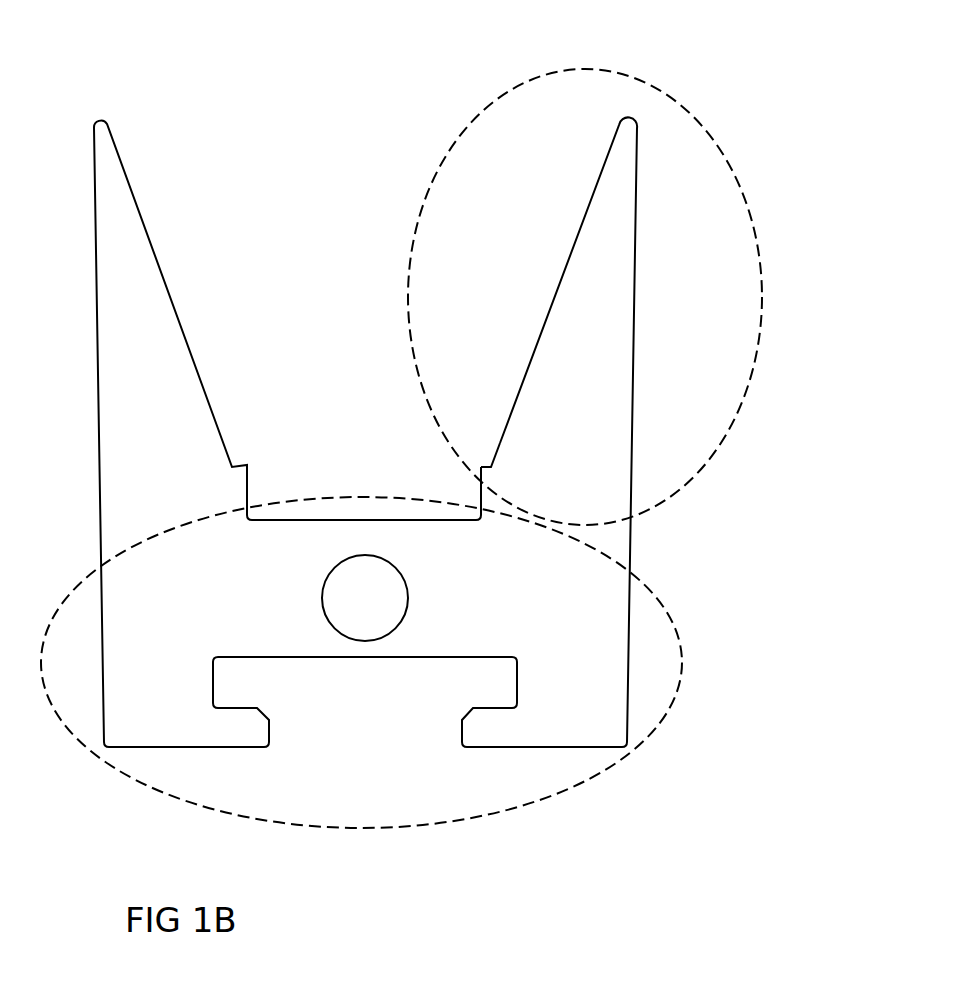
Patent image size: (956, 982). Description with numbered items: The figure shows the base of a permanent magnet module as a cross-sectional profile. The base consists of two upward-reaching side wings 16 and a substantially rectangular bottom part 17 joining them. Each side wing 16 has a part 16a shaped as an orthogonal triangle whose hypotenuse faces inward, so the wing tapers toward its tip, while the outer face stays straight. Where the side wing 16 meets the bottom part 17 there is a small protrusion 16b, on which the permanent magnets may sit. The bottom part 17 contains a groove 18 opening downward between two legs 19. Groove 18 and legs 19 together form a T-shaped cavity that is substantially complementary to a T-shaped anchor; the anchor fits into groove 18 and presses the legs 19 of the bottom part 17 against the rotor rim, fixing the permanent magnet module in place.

The side wing 16 is at (693, 122).
The part of side wing 16a is at (634, 313).
The protrusion 16b is at (496, 468).
The bottom part 17 is at (673, 700).
The groove 18 is at (356, 708).
The legs 19 is at (460, 726).